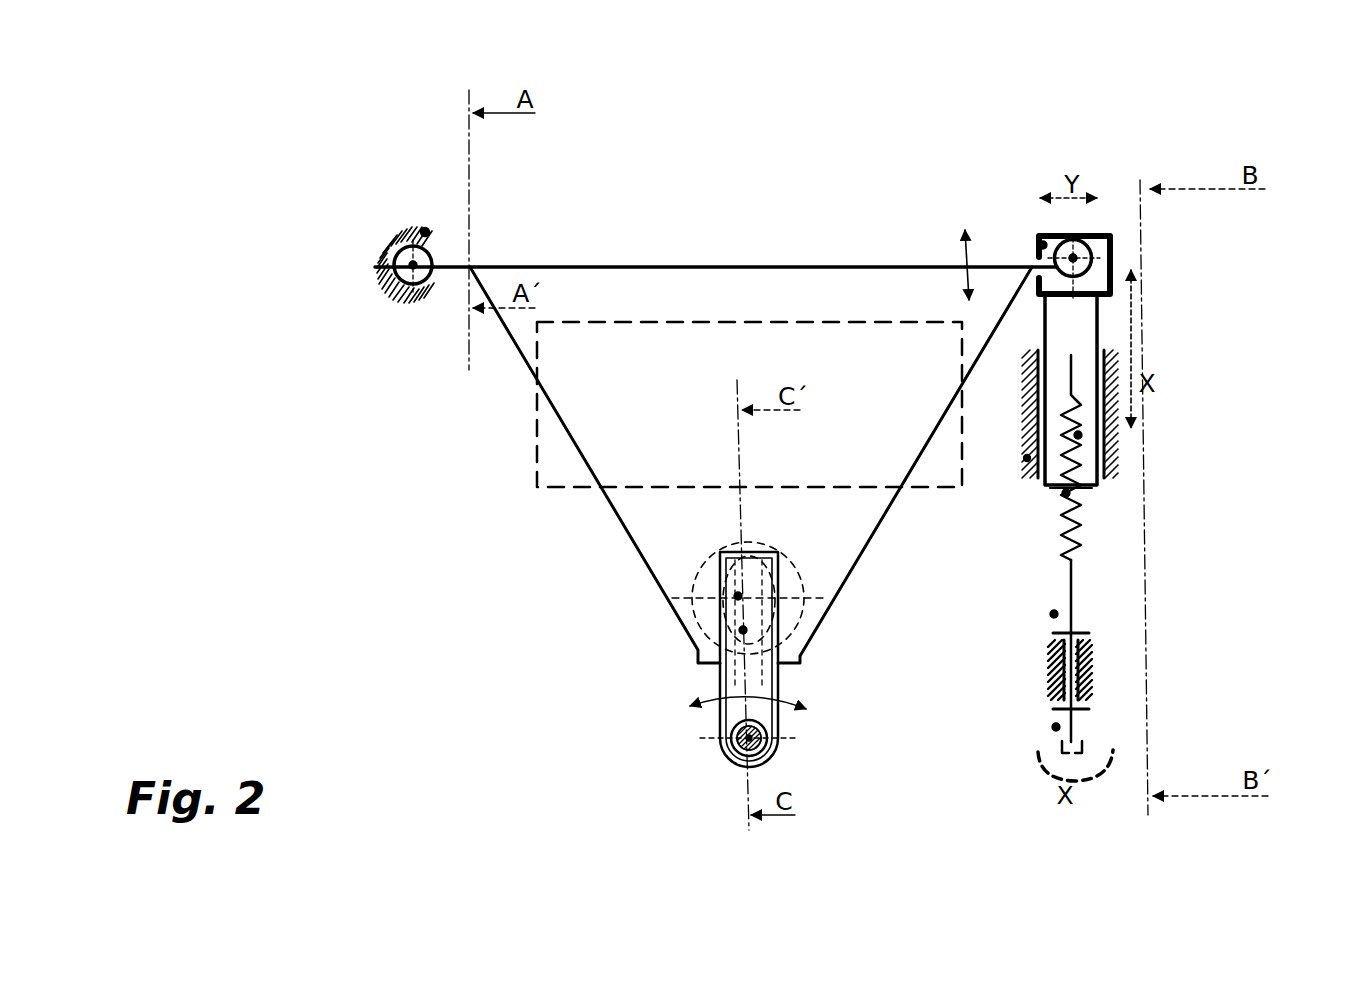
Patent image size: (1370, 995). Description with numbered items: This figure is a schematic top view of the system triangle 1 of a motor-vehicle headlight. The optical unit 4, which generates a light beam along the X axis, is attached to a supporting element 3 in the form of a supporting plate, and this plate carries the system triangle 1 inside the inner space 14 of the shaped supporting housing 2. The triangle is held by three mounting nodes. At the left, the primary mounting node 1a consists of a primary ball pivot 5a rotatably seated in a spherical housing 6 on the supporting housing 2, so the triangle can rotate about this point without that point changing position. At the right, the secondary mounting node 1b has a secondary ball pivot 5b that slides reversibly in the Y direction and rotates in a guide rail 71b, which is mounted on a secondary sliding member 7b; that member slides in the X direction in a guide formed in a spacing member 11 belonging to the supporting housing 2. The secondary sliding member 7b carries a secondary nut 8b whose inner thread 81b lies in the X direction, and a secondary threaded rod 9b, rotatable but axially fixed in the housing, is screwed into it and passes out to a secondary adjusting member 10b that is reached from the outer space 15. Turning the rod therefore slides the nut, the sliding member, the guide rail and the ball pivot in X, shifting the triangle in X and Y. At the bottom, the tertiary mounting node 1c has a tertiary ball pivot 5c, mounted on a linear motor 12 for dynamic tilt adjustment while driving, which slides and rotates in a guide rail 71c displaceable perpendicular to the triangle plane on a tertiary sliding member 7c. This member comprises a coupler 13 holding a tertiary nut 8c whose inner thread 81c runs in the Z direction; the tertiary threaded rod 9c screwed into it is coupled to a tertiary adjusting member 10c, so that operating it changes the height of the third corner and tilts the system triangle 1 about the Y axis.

The system triangle 1 is at (1033, 180).
The primary mounting node 1a is at (790, 398).
The supporting housing 2 is at (535, 143).
The primary ball pivot 5a is at (439, 250).
The spherical housing 6 is at (440, 264).
The supporting element 3 is at (735, 264).
The optical unit 4 is at (660, 320).
The coupler 13 is at (447, 603).
The secondary mounting node 1b is at (1139, 501).
The guide rail 71b is at (1044, 245).
The secondary ball pivot 5b is at (1098, 256).
The secondary sliding member 7b is at (1100, 314).
The inner thread 81b is at (1119, 435).
The spacing member 11 is at (1080, 437).
The secondary nut 8b is at (1068, 493).
The secondary threaded rod 9b is at (1076, 576).
The secondary adjusting member 10b is at (1145, 742).
The inner space 14 is at (1052, 615).
The outer space 15 is at (1054, 728).
The tertiary mounting node 1c is at (561, 678).
The linear motor 12 is at (730, 530).
The tertiary ball pivot 5c is at (718, 563).
The guide rail 71c is at (718, 606).
The tertiary sliding member 7c is at (715, 669).
The tertiary nut 8c is at (715, 740).
The inner thread 81c is at (727, 752).
The tertiary threaded rod 9c is at (742, 762).
The tertiary adjusting member 10c is at (742, 762).